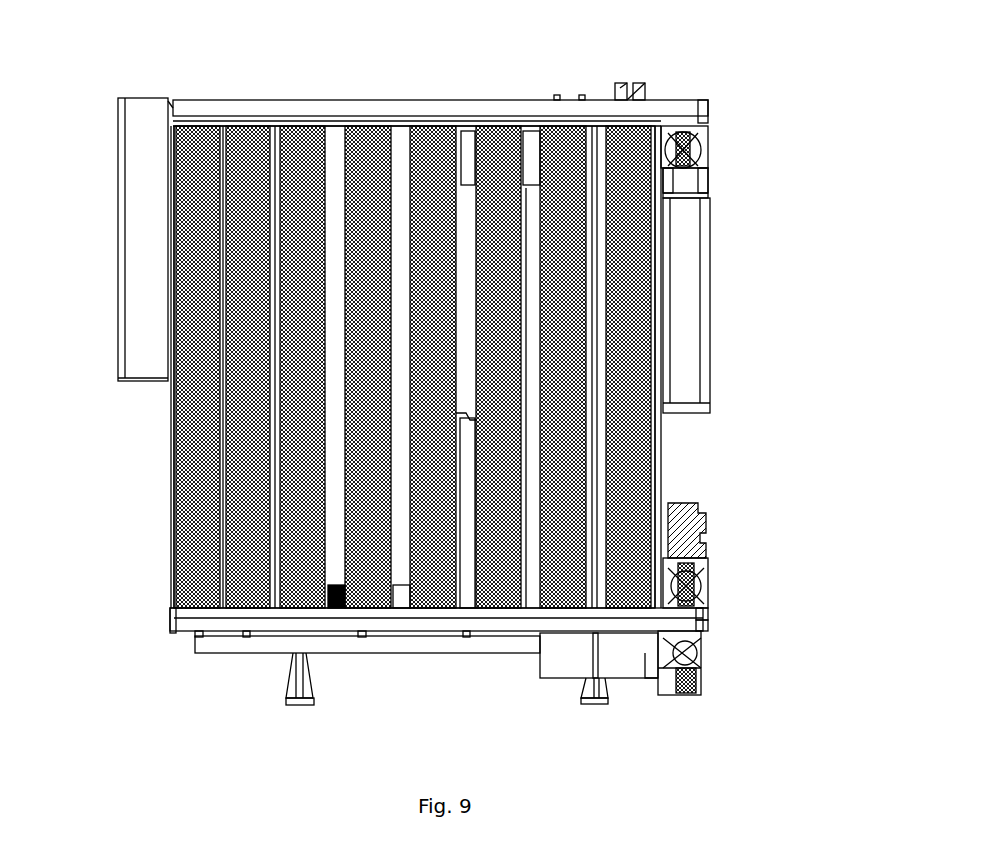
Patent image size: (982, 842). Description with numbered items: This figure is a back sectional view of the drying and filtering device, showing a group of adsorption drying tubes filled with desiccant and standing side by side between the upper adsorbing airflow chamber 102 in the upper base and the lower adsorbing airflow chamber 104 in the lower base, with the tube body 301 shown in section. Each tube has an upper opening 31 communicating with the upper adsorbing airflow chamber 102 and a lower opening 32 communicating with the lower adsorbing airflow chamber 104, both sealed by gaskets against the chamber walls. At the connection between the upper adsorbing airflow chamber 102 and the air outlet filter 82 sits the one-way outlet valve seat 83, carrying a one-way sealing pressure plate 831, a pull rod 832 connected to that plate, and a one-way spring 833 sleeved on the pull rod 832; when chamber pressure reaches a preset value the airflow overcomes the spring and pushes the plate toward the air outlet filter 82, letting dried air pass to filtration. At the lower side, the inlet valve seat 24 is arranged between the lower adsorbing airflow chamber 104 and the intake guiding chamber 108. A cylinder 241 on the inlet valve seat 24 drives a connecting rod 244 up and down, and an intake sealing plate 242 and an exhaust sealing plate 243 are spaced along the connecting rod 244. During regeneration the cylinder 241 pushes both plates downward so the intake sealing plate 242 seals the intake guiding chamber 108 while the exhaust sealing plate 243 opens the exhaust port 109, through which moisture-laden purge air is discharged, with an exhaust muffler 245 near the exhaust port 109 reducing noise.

The upper opening 31 is at (190, 108).
The upper adsorbing airflow chamber 102 is at (352, 105).
The one-way sealing pressure plate 831 is at (690, 95).
The one-way outlet valve seat 83 is at (748, 151).
The pull rod 832 is at (695, 143).
The one-way spring 833 is at (700, 160).
The air outlet filter 82 is at (703, 338).
The filter module body 301 is at (165, 420).
The cylinder 241 is at (672, 497).
The inlet valve seat 24 is at (729, 509).
The intake sealing plate 242 is at (700, 548).
The intake guiding chamber 108 is at (700, 590).
The exhaust port 109 is at (700, 615).
The exhaust sealing plate 243 is at (721, 685).
The connecting rod 244 is at (693, 655).
The exhaust muffler 245 is at (557, 655).
The lower adsorbing airflow chamber 104 is at (383, 608).
The lower opening 32 is at (186, 605).